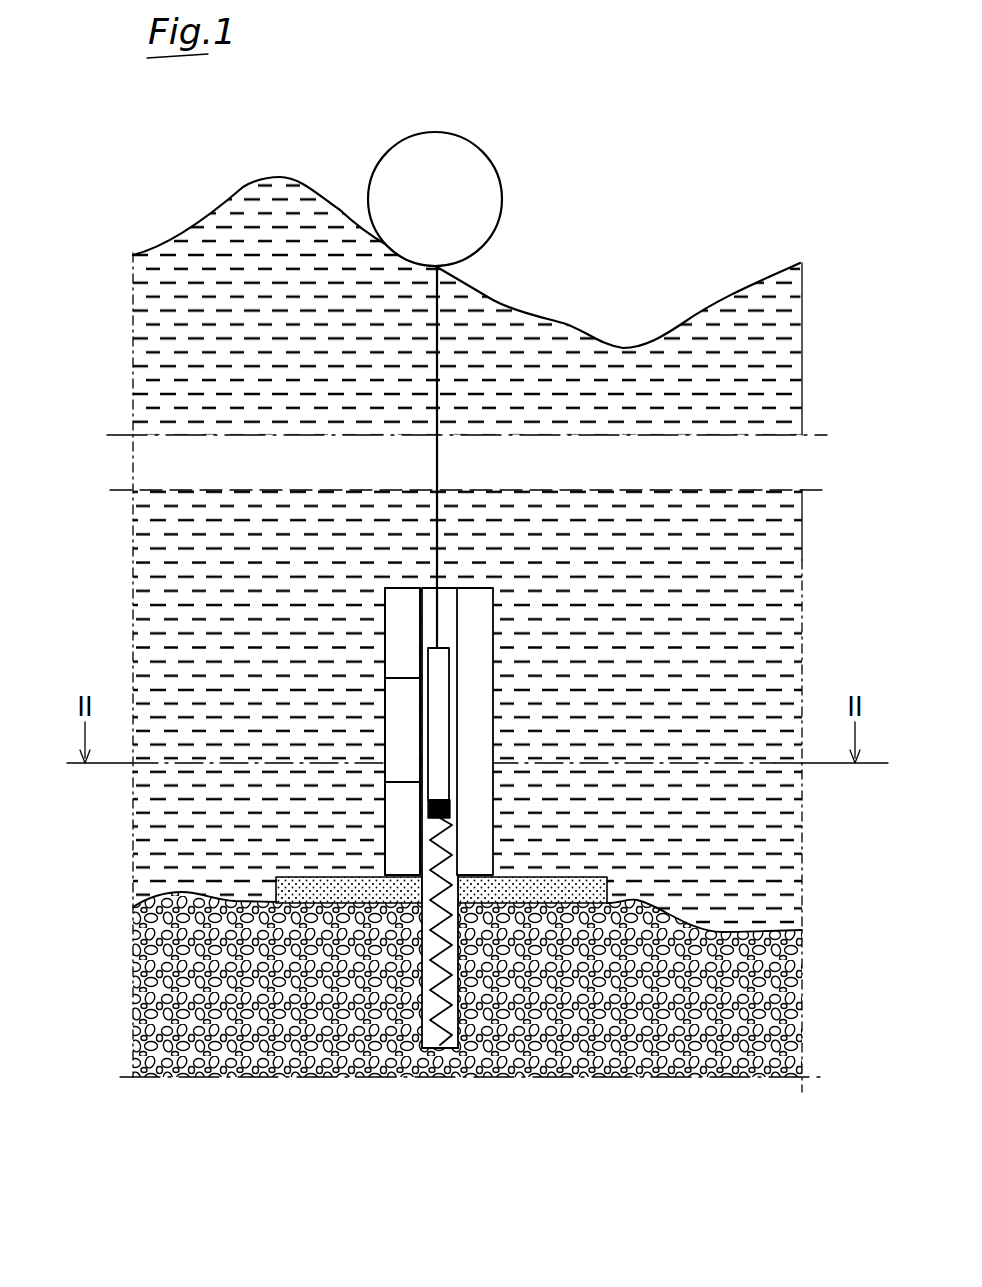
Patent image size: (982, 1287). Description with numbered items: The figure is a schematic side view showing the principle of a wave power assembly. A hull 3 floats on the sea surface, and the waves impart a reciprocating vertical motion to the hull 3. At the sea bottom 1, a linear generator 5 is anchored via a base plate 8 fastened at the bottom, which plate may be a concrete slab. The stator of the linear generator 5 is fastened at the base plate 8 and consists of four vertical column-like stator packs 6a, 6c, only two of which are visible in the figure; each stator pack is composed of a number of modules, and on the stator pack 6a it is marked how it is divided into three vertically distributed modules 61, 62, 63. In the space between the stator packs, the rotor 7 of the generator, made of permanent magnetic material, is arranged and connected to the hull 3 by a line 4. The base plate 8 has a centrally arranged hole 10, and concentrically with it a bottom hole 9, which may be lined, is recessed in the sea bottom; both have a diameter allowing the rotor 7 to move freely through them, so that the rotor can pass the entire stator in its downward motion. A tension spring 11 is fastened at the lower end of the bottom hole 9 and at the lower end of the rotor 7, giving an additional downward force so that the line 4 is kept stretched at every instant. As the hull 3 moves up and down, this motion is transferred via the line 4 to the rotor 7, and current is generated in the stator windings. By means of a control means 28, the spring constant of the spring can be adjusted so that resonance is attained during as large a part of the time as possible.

The bottom 1 is at (722, 932).
The hull 3 is at (475, 163).
The line 4 is at (432, 310).
The linear generator 5 is at (517, 618).
The stator pack 6a is at (218, 678).
The module 61 is at (395, 610).
The module 62 is at (398, 705).
The module 63 is at (402, 825).
The stator pack 6c is at (490, 640).
The rotor 7 is at (438, 697).
The control means 28 is at (452, 807).
The base plate 8 is at (572, 876).
The bottom hole 9 is at (453, 957).
The hole 10 is at (425, 890).
The tension spring 11 is at (460, 905).